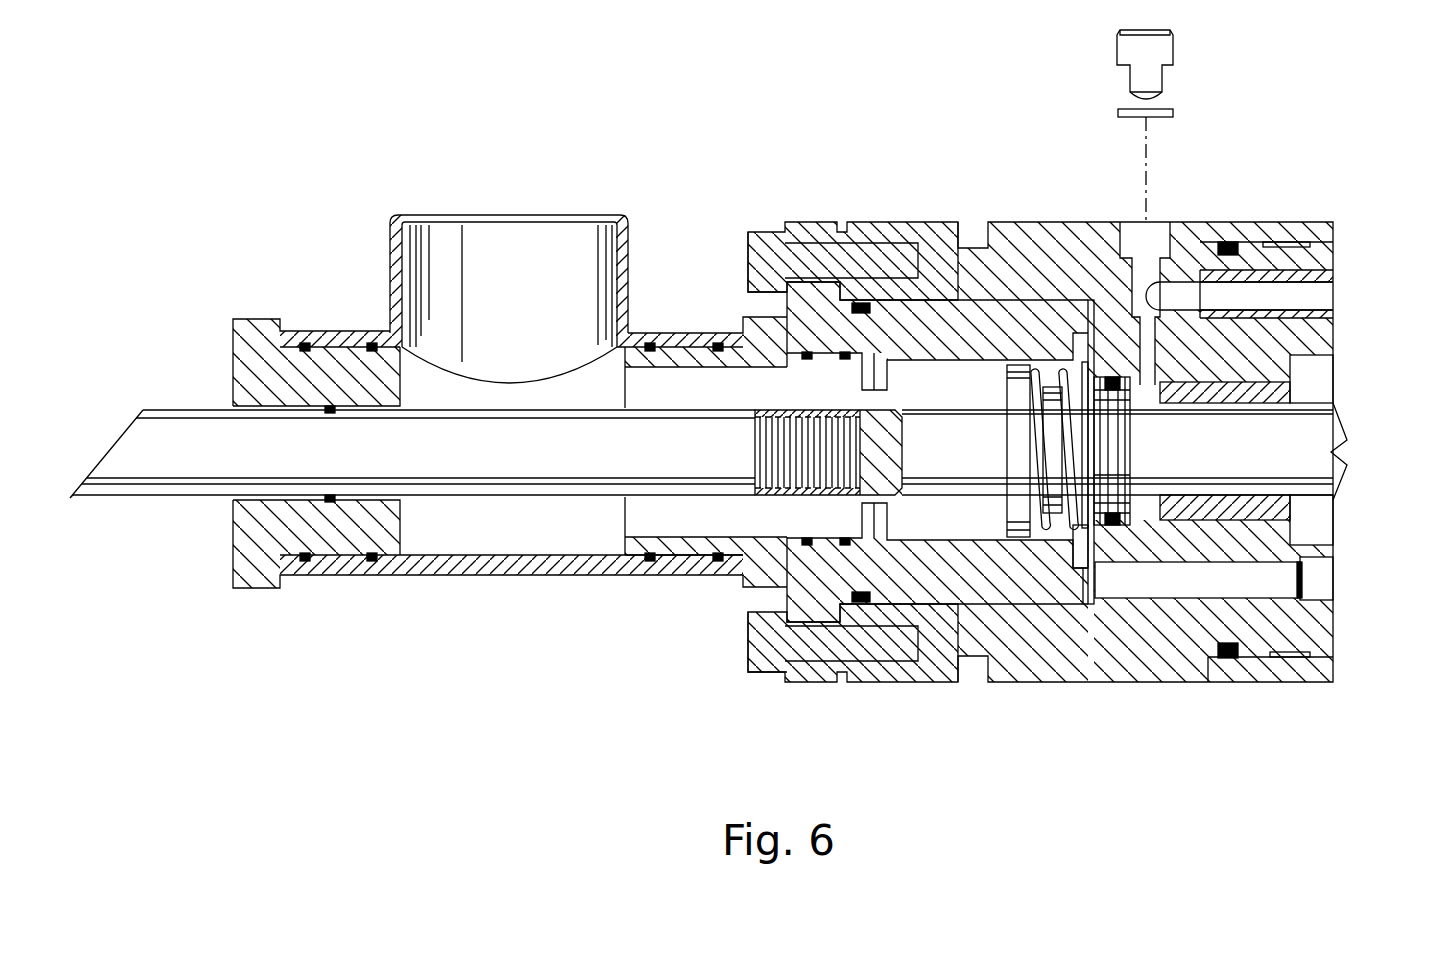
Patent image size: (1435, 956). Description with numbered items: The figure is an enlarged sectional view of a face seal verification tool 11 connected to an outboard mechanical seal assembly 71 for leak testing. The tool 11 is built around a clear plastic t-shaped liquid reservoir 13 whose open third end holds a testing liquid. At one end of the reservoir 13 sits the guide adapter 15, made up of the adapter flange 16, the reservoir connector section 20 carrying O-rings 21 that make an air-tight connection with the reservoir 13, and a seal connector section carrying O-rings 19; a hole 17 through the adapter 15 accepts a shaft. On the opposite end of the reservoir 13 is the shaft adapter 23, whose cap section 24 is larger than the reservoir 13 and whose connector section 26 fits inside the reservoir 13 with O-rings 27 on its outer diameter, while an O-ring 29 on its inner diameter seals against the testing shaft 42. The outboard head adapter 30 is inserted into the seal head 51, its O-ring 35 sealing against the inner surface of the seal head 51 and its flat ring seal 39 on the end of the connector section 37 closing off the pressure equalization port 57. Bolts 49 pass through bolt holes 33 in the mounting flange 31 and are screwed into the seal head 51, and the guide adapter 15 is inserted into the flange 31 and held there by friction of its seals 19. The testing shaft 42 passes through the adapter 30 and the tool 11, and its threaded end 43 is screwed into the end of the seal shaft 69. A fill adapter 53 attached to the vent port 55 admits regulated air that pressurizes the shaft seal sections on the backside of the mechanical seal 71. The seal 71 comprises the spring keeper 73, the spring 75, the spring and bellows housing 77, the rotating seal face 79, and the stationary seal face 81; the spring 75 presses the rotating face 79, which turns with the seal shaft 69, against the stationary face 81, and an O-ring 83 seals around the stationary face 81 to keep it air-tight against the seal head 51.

The face seal verification tool 11 is at (540, 407).
The liquid reservoir 13 is at (388, 232).
The guide adapter 15 is at (666, 507).
The adapter flange 16 is at (757, 588).
The hole 17 is at (650, 545).
The O-rings 19 is at (845, 547).
The reservoir connector section 20 is at (690, 330).
The O-rings 21 is at (718, 562).
The shaft adapter 23 is at (401, 457).
The cap section 24 is at (242, 320).
The connector section 26 is at (345, 345).
The O-rings 27 is at (372, 560).
The O-ring 29 is at (739, 459).
The outboard head adapter 30 is at (815, 454).
The mounting flange 31 is at (803, 225).
The bolt holes 33 is at (775, 232).
The O-ring 35 is at (862, 302).
The connector section 37 is at (912, 517).
The flat ring seal 39 is at (1080, 590).
The testing shaft 42 is at (172, 500).
The threaded end 43 is at (822, 410).
The bolts 49 is at (762, 673).
The seal head 51 is at (870, 604).
The fill adapter 53 is at (1175, 50).
The vent port 55 is at (1145, 380).
The pressure equalization port 57 is at (1158, 584).
The seal shaft 69 is at (1340, 398).
The outboard mechanical seal assembly 71 is at (1101, 447).
The spring keeper 73 is at (1006, 398).
The spring 75 is at (1045, 365).
The spring and bellows housing 77 is at (1082, 362).
The rotating seal face 79 is at (1094, 425).
The stationary seal face 81 is at (1094, 452).
The O-ring 83 is at (1112, 377).